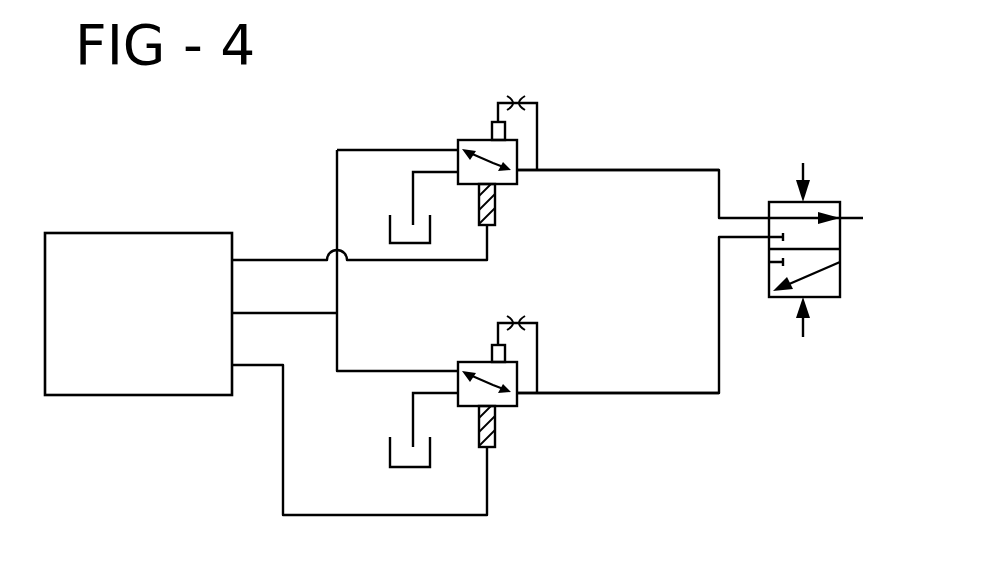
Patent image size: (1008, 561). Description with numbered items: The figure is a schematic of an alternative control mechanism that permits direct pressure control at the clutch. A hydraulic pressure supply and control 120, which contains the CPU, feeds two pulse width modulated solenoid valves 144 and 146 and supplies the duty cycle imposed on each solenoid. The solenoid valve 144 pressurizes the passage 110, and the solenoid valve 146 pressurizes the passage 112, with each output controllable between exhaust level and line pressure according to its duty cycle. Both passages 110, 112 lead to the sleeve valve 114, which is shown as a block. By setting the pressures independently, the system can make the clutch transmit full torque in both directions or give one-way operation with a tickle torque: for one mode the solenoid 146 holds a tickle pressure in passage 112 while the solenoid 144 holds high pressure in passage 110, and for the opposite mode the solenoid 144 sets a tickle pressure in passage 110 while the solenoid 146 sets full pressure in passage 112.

The control 120 is at (145, 233).
The passage 110 is at (618, 170).
The passage 112 is at (680, 394).
The sleeve valve 114 is at (825, 202).
The pulse width modulated solenoid valve 144 is at (513, 186).
The pulse width modulated solenoid valve 146 is at (512, 408).